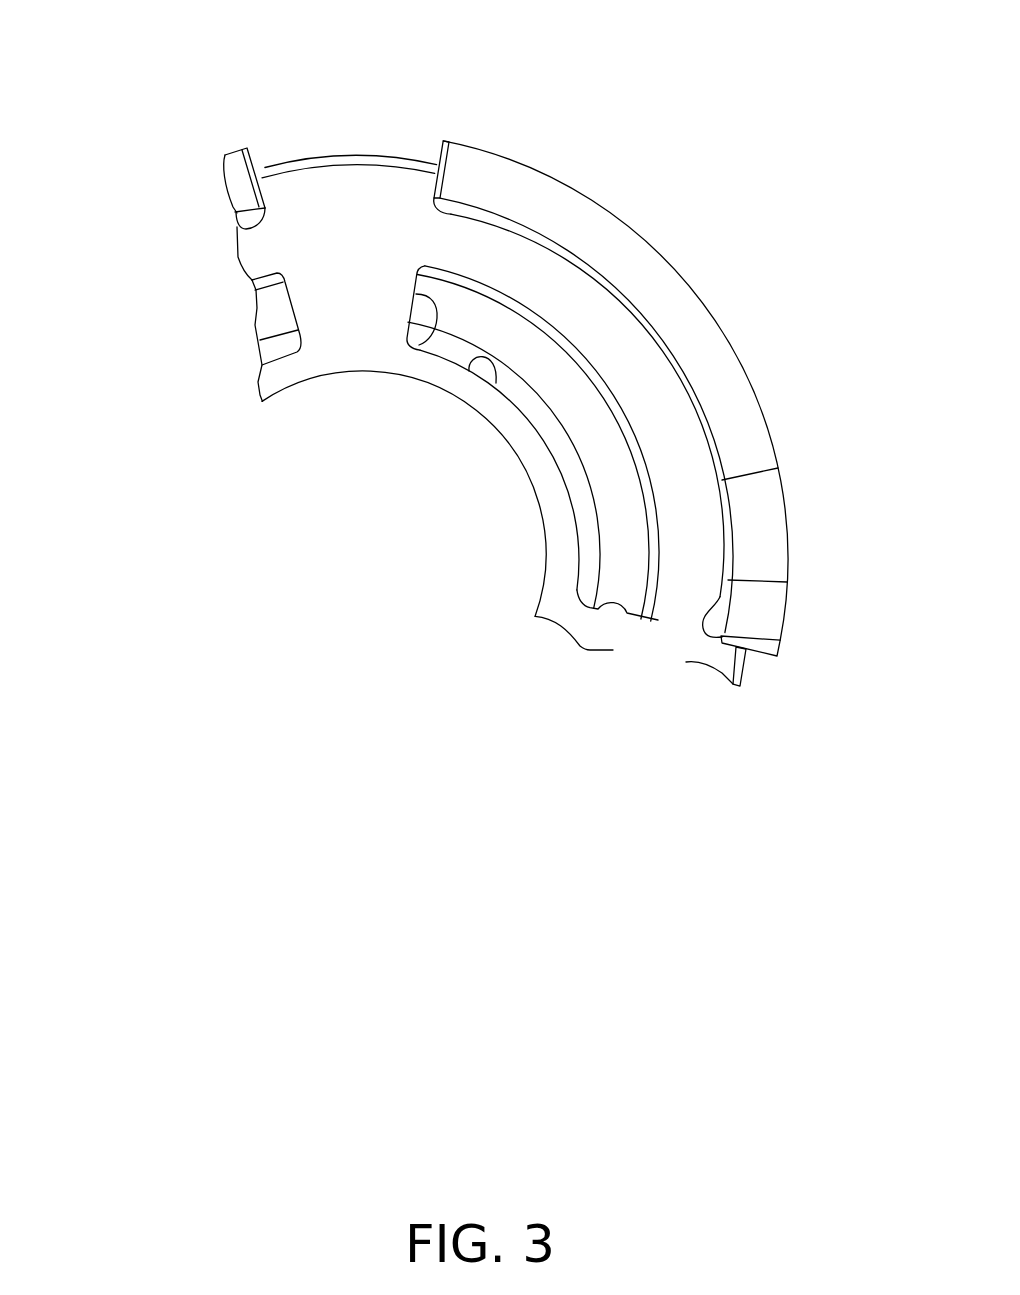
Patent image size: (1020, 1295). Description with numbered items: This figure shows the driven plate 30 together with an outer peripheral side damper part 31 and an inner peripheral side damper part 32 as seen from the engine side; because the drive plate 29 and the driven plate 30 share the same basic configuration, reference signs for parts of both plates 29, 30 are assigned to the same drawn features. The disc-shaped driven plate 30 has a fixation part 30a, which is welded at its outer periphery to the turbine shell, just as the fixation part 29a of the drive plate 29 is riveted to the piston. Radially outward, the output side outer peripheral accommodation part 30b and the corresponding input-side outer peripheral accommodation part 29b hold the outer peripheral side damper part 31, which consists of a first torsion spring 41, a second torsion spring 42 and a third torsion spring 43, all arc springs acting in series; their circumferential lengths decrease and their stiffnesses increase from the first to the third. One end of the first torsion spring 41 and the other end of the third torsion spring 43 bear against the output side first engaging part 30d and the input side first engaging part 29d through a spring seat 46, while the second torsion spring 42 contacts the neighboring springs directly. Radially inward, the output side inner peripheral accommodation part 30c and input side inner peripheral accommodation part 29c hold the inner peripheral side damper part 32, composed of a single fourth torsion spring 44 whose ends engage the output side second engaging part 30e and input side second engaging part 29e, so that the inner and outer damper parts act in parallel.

The drive plate 29 is at (329, 438).
The driven plate 30 is at (329, 438).
The fixation part 29a is at (350, 242).
The fixation part 30a is at (197, 314).
The input-side outer peripheral accommodation part 29b is at (527, 227).
The output side outer peripheral accommodation part 30b is at (583, 373).
The input side inner peripheral accommodation part 29c is at (488, 357).
The output side inner peripheral accommodation part 30c is at (428, 376).
The input side first engaging part 29d is at (364, 156).
The output side first engaging part 30d is at (562, 403).
The input side second engaging part 29e is at (420, 346).
The output side second engaging part 30e is at (453, 531).
The outer peripheral side damper part 31 is at (666, 390).
The inner peripheral side damper part 32 is at (453, 517).
The first torsion spring 41 is at (656, 259).
The second torsion spring 42 is at (770, 490).
The third torsion spring 43 is at (775, 605).
The fourth torsion spring 44 is at (613, 497).
The spring seat 46 is at (248, 150).